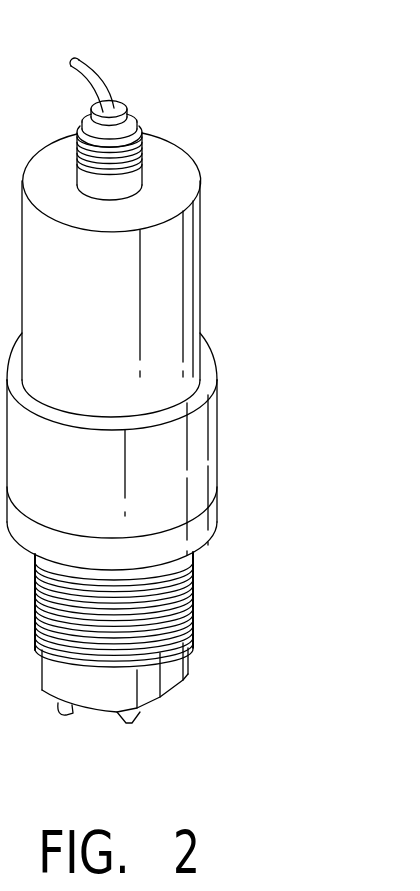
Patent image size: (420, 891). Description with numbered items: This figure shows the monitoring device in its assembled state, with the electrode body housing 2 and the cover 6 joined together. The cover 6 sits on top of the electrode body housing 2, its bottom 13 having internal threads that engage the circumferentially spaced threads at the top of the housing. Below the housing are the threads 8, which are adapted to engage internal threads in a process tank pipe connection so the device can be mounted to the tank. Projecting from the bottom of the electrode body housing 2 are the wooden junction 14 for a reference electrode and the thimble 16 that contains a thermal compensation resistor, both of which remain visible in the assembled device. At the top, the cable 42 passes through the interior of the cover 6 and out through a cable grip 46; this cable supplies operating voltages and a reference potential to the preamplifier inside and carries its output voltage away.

The electrode body housing 2 is at (224, 501).
The cover 6 is at (200, 246).
The threads 8 is at (194, 596).
The bottom of the cover 13 is at (217, 402).
The wooden junction 14 is at (128, 723).
The thimble 16 is at (60, 713).
The cable 42 is at (90, 62).
The cable grip 46 is at (122, 100).